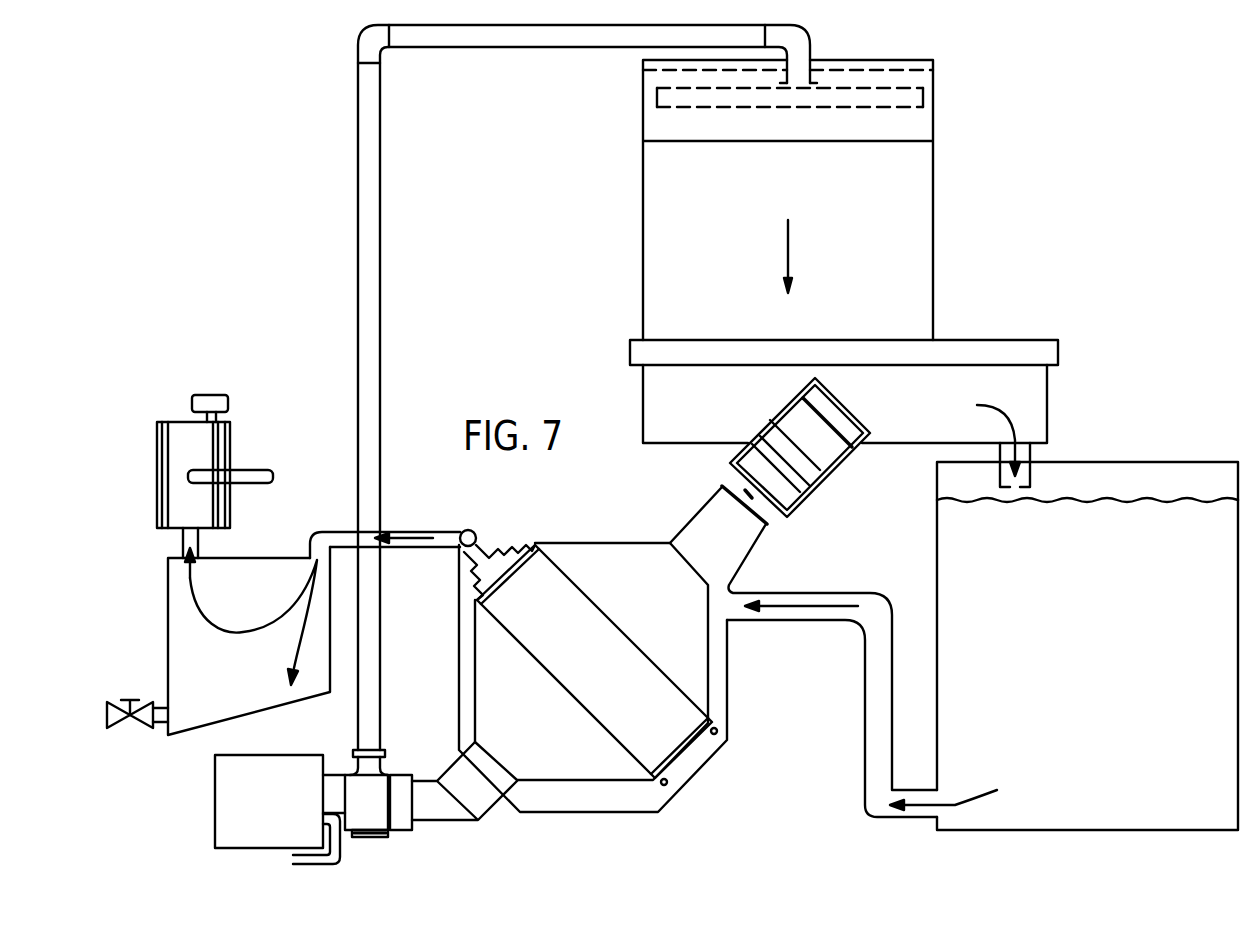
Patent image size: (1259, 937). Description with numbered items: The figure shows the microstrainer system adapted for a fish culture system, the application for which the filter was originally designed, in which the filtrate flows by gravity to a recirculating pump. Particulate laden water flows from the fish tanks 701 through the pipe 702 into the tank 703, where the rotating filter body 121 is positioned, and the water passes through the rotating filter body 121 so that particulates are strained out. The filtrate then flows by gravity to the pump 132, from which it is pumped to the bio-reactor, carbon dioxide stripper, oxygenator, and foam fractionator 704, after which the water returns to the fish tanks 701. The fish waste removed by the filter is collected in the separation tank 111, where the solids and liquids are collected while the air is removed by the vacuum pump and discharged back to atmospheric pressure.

The separation tank 111 is at (168, 607).
The rotating filter body 121 is at (560, 772).
The pump 132 is at (247, 848).
The fish tanks 701 is at (937, 548).
The pipe 702 is at (866, 742).
The tank 703 is at (593, 810).
The bio-reactor, CO2 stripper, oxygenator, and foam fractionator 704 is at (933, 243).